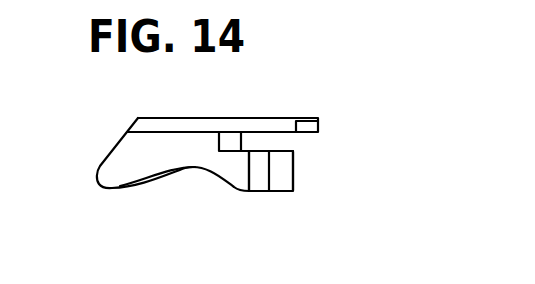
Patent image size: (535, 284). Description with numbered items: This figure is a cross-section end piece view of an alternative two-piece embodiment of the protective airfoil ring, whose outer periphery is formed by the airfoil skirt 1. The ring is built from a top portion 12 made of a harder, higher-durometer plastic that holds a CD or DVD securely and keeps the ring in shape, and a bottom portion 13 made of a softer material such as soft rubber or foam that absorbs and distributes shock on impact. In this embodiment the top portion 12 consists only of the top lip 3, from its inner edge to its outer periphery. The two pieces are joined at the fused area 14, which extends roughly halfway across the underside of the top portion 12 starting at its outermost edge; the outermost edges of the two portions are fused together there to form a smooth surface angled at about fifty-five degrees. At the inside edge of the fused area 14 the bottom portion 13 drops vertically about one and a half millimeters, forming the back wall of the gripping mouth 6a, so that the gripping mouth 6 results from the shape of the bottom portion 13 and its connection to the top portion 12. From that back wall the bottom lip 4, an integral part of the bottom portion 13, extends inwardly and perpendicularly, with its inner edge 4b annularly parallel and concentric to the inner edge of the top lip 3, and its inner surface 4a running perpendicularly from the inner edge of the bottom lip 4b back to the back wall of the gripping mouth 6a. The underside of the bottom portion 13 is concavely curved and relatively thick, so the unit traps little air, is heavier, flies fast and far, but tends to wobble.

The airfoil skirt 1 is at (140, 152).
The top lip 3 is at (268, 127).
The bottom lip 4 is at (305, 126).
The inner surface of the bottom lip 4a is at (247, 191).
The inner edge of the bottom lip 4b is at (279, 178).
The gripping mouth 6 is at (263, 141).
The back wall of the gripping mouth 6a is at (230, 144).
The top portion 12 is at (187, 127).
The bottom portion 13 is at (183, 153).
The fused area 14 is at (130, 131).